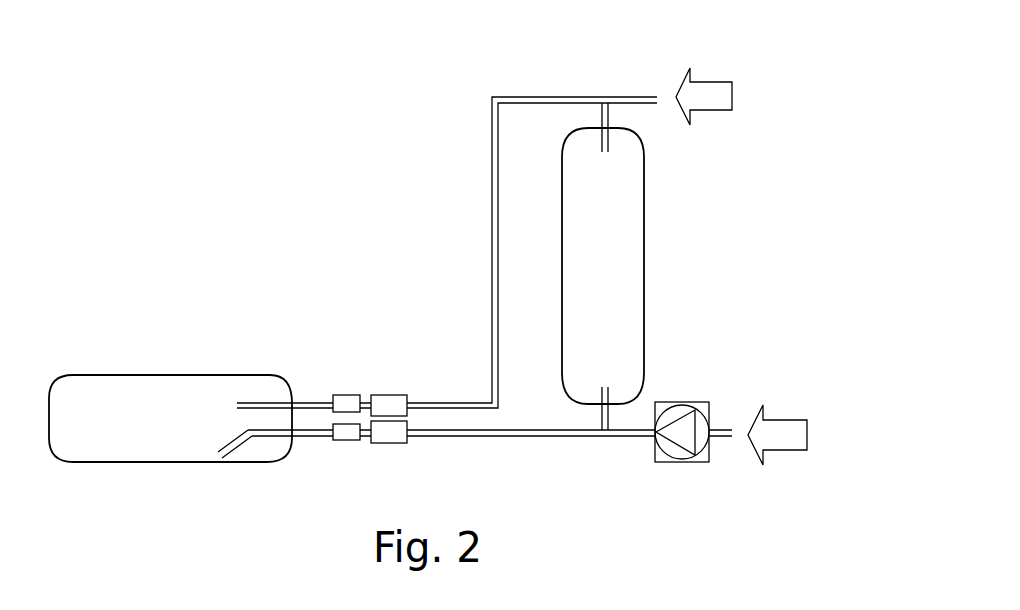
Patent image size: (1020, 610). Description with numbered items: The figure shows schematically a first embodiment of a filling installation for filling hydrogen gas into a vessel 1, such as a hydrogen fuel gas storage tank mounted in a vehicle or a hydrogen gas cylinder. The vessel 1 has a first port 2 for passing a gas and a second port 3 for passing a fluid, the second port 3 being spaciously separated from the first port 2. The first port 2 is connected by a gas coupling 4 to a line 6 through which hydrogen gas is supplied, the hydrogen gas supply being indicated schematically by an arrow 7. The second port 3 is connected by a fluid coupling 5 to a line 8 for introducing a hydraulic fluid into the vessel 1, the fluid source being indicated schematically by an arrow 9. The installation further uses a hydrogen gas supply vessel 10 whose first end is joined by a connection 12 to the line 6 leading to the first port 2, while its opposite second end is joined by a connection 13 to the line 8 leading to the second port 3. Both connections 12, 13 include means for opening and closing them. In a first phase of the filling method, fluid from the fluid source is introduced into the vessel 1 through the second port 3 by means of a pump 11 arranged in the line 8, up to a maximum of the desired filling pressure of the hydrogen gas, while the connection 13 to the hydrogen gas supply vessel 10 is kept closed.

The vessel 1 is at (95, 373).
The first port 2 is at (343, 395).
The second port 3 is at (343, 440).
The gas coupling 4 is at (398, 395).
The fluid coupling 5 is at (398, 443).
The line 6 is at (513, 101).
The arrow 7 is at (708, 98).
The line 8 is at (595, 438).
The arrow 9 is at (777, 430).
The hydrogen gas supply vessel 10 is at (647, 190).
The pump 11 is at (667, 463).
The connection 12 is at (601, 117).
The connection 13 is at (601, 413).